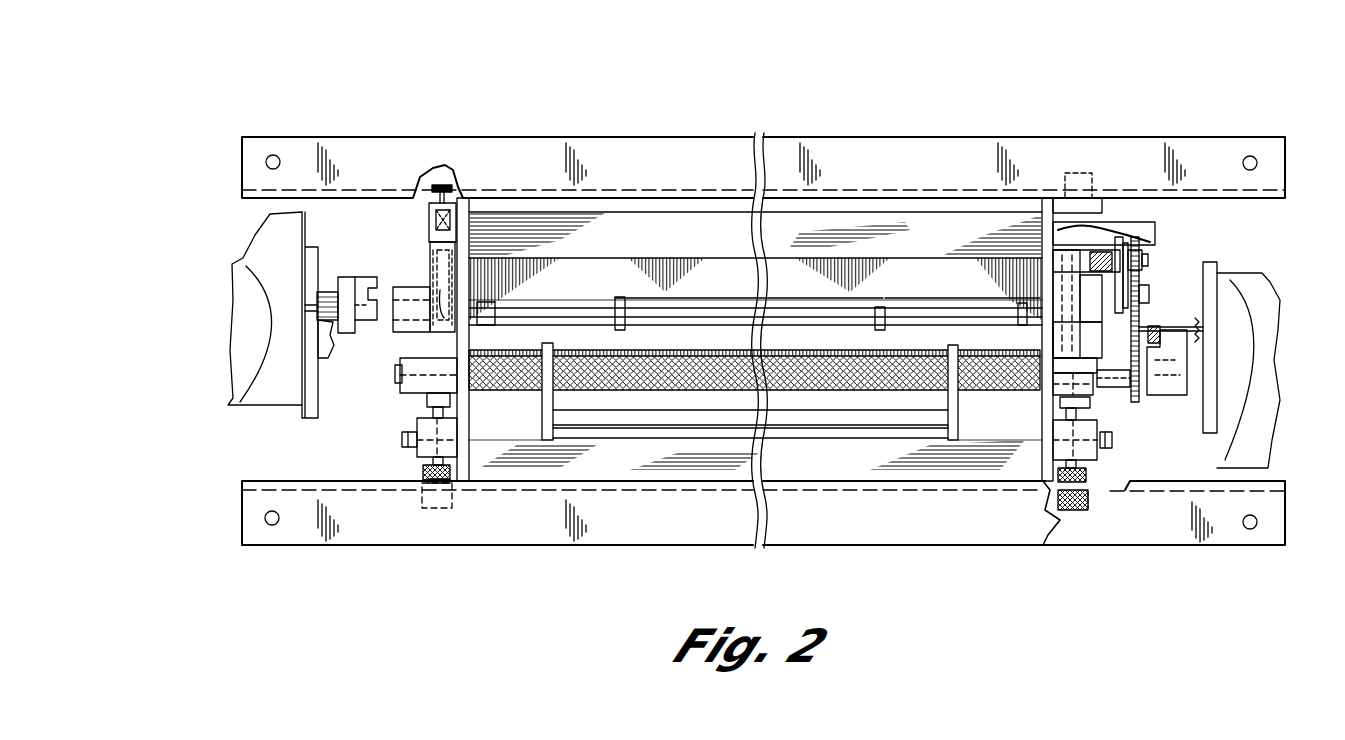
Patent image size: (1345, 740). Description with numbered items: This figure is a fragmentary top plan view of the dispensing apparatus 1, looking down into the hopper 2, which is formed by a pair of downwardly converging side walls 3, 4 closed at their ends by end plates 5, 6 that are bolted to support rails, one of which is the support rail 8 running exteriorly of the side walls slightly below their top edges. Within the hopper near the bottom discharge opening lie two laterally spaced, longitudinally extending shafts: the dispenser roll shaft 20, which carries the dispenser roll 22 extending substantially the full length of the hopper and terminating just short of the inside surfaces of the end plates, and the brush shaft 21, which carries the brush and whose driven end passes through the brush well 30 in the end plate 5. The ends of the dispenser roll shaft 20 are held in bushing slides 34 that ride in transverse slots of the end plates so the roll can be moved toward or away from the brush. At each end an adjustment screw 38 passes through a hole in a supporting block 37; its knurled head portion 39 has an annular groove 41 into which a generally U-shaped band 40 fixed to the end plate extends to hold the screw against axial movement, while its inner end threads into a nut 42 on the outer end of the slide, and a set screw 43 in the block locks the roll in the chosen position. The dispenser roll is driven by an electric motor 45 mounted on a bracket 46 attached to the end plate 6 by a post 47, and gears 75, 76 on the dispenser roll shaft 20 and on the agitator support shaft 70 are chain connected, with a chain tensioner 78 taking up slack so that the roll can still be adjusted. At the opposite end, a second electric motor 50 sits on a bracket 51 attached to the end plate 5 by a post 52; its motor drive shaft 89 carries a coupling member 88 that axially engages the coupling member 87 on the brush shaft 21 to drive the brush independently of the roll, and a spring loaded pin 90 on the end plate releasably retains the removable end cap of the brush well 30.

The dispensing apparatus 1 is at (503, 135).
The hopper 2 is at (925, 252).
The side wall 3 is at (626, 462).
The side wall 4 is at (640, 226).
The end plate 5 is at (437, 285).
The end plate 6 is at (1048, 212).
The support rail 8 is at (1024, 140).
The dispenser roll shaft 20 is at (1115, 386).
The brush shaft 21 is at (398, 322).
The dispenser roll 22 is at (882, 392).
The brush well 30 is at (430, 260).
The bushing slide 34 is at (410, 390).
The block 37 is at (418, 452).
The adjustment screw 38 is at (423, 468).
The knurled head portion 39 is at (426, 488).
The U-shaped band 40 is at (455, 500).
The annular groove 41 is at (1080, 512).
The nut 42 is at (427, 402).
The set screw 43 is at (402, 438).
The electric motor 45 is at (1266, 318).
The bracket 46 is at (1213, 266).
The post 47 is at (1183, 330).
The second electric motor 50 is at (250, 292).
The bracket 51 is at (310, 418).
The post 52 is at (334, 343).
The agitator support shaft 70 is at (1148, 348).
The gear 75 is at (1140, 396).
The gear 76 is at (1128, 332).
The chain tensioner 78 is at (1150, 262).
The coupling member 87 is at (370, 278).
The coupling member 88 is at (347, 278).
The motor drive shaft 89 is at (330, 300).
The spring loaded pin 90 is at (440, 184).